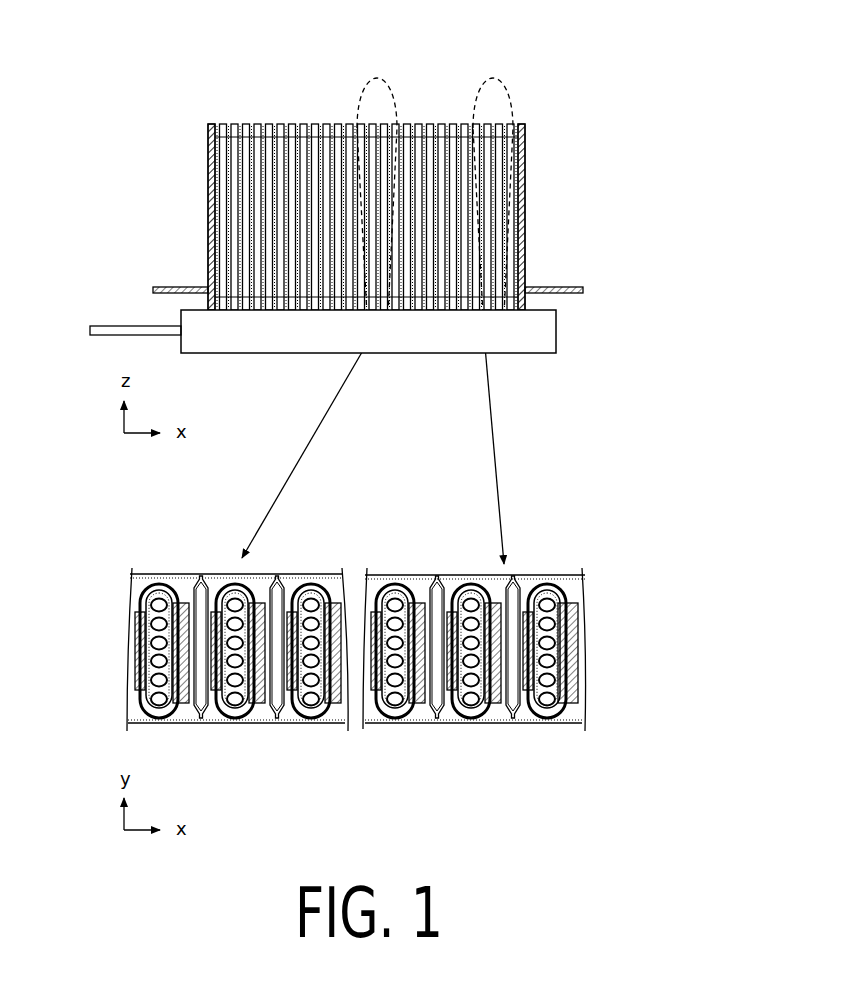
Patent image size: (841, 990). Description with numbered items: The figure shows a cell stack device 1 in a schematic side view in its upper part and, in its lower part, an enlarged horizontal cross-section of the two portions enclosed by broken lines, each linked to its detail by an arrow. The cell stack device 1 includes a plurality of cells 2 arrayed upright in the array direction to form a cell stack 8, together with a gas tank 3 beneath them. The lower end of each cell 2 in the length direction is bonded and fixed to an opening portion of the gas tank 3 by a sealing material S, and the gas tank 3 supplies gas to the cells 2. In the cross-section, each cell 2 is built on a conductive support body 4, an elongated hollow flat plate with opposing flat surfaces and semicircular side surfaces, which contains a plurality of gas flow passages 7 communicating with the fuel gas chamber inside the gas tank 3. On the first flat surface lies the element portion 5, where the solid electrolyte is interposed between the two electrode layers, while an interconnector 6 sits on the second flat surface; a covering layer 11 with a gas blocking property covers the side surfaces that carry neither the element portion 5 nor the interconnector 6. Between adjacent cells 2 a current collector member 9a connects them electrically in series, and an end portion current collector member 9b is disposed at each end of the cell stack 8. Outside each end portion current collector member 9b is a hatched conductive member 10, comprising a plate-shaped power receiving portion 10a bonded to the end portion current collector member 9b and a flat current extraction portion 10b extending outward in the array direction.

The cell stack device 1 is at (200, 23).
The cell 2 is at (423, 123).
The gas tank 3 is at (556, 337).
The conductive support body 4 is at (540, 722).
The element portion 5 is at (503, 590).
The interconnector 6 is at (575, 602).
The gas flow passage 7 is at (531, 707).
The cell stack 8 is at (204, 109).
The current collector member 9a is at (312, 147).
The end portion current collector member 9b is at (217, 150).
The conductive member 10 is at (118, 223).
The power receiving portion 10a is at (208, 224).
The current extraction portion 10b is at (188, 287).
The covering layer 11 is at (561, 720).
The sealing material S is at (383, 577).